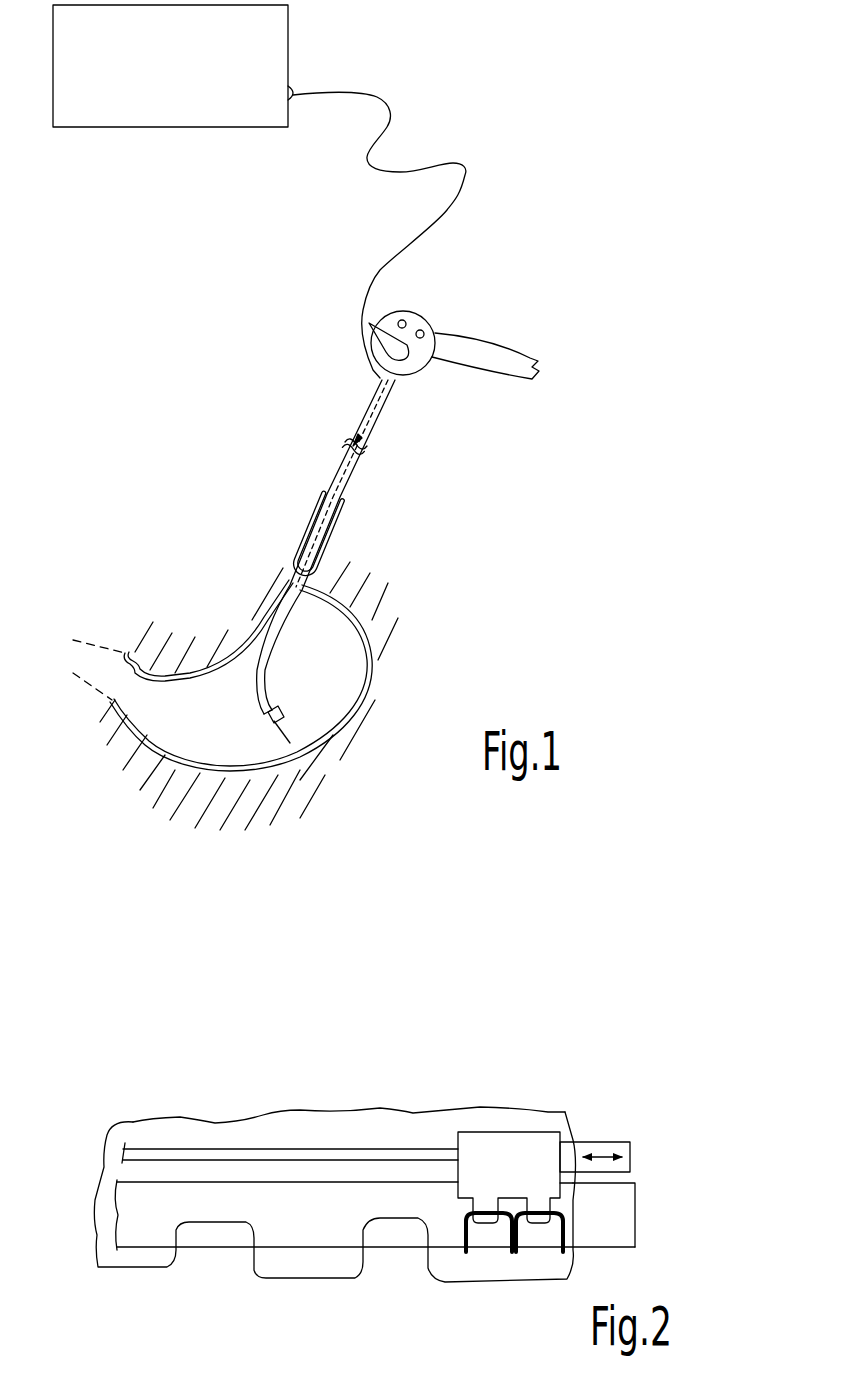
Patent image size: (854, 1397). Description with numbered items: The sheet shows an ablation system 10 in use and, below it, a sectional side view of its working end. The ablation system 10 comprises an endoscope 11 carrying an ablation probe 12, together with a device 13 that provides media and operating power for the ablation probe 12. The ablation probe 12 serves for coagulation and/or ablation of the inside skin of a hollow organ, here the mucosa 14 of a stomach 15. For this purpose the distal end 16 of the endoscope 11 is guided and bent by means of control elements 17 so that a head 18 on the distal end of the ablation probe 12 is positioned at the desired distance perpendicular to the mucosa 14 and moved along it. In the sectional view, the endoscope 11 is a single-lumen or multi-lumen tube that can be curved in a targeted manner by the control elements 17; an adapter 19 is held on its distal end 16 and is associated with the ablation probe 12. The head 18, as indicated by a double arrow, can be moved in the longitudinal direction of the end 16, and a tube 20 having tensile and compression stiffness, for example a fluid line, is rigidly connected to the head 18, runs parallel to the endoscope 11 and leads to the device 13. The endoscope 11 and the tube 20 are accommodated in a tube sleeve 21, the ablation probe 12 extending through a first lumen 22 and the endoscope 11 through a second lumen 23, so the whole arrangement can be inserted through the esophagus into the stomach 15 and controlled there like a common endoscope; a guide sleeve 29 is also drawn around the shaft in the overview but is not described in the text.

In FIG. 1, the ablation system 10 is at (587, 183).
In FIG. 1, the endoscope 11 is at (410, 408).
In FIG. 2, the endoscope 11 is at (397, 1231).
In FIG. 1, the ablation probe 12 is at (264, 720).
In FIG. 2, the ablation probe 12 is at (588, 1113).
In FIG. 1, the device for providing media and operating power 13 is at (302, 62).
In FIG. 1, the mucosa 14 is at (243, 762).
In FIG. 1, the stomach 15 is at (398, 657).
In FIG. 1, the distal end 16 is at (279, 682).
In FIG. 2, the distal end 16 is at (373, 1070).
In FIG. 1, the control elements 17 is at (393, 307).
In FIG. 1, the head 18 is at (290, 743).
In FIG. 2, the head 18 is at (602, 1143).
In FIG. 2, the adapter 19 is at (515, 1148).
In FIG. 1, the tube 20 is at (370, 403).
In FIG. 2, the tube 20 is at (272, 1153).
In FIG. 2, the tube sleeve 21 is at (448, 1113).
In FIG. 2, the first lumen 22 is at (205, 1138).
In FIG. 2, the second lumen 23 is at (117, 1258).
In FIG. 1, the guide sleeve 29 is at (337, 528).